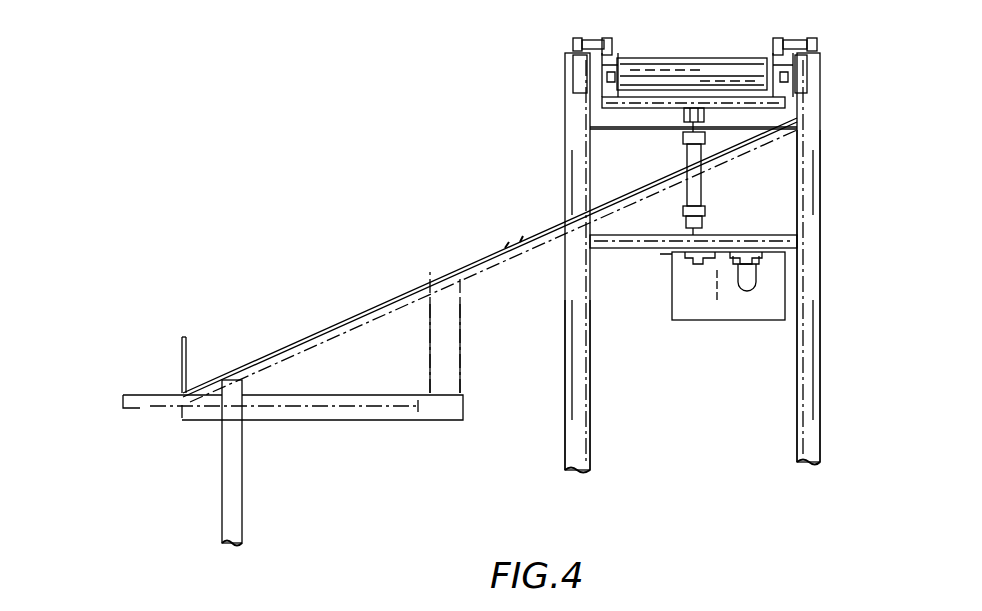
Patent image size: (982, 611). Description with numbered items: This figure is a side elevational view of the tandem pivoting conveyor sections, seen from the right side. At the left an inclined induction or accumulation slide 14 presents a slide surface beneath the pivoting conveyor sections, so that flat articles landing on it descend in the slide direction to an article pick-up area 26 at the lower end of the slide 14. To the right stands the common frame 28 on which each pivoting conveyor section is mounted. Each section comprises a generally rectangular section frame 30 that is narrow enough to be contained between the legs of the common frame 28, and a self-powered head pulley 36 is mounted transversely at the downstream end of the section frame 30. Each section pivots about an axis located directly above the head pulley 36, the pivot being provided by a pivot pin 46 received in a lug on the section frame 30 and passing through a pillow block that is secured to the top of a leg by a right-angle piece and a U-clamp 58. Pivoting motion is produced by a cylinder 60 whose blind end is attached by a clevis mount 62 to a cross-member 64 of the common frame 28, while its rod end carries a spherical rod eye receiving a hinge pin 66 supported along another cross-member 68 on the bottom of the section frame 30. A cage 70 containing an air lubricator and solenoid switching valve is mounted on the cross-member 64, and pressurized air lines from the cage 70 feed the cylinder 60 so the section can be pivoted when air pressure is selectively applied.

The induction or accumulation slide 14 is at (382, 300).
The article pick-up area 26 is at (231, 363).
The common frame 28 is at (563, 170).
The section frame 30 is at (612, 83).
The head pulley 36 is at (668, 58).
The pivot pin 46 is at (612, 43).
The U-clamp 58 is at (583, 27).
The cylinder 60 is at (700, 180).
The clevis mount 62 is at (703, 226).
The cross-member 64 is at (640, 248).
The hinge pin 66 is at (703, 117).
The cross-member 68 is at (640, 112).
The cage 70 is at (722, 323).